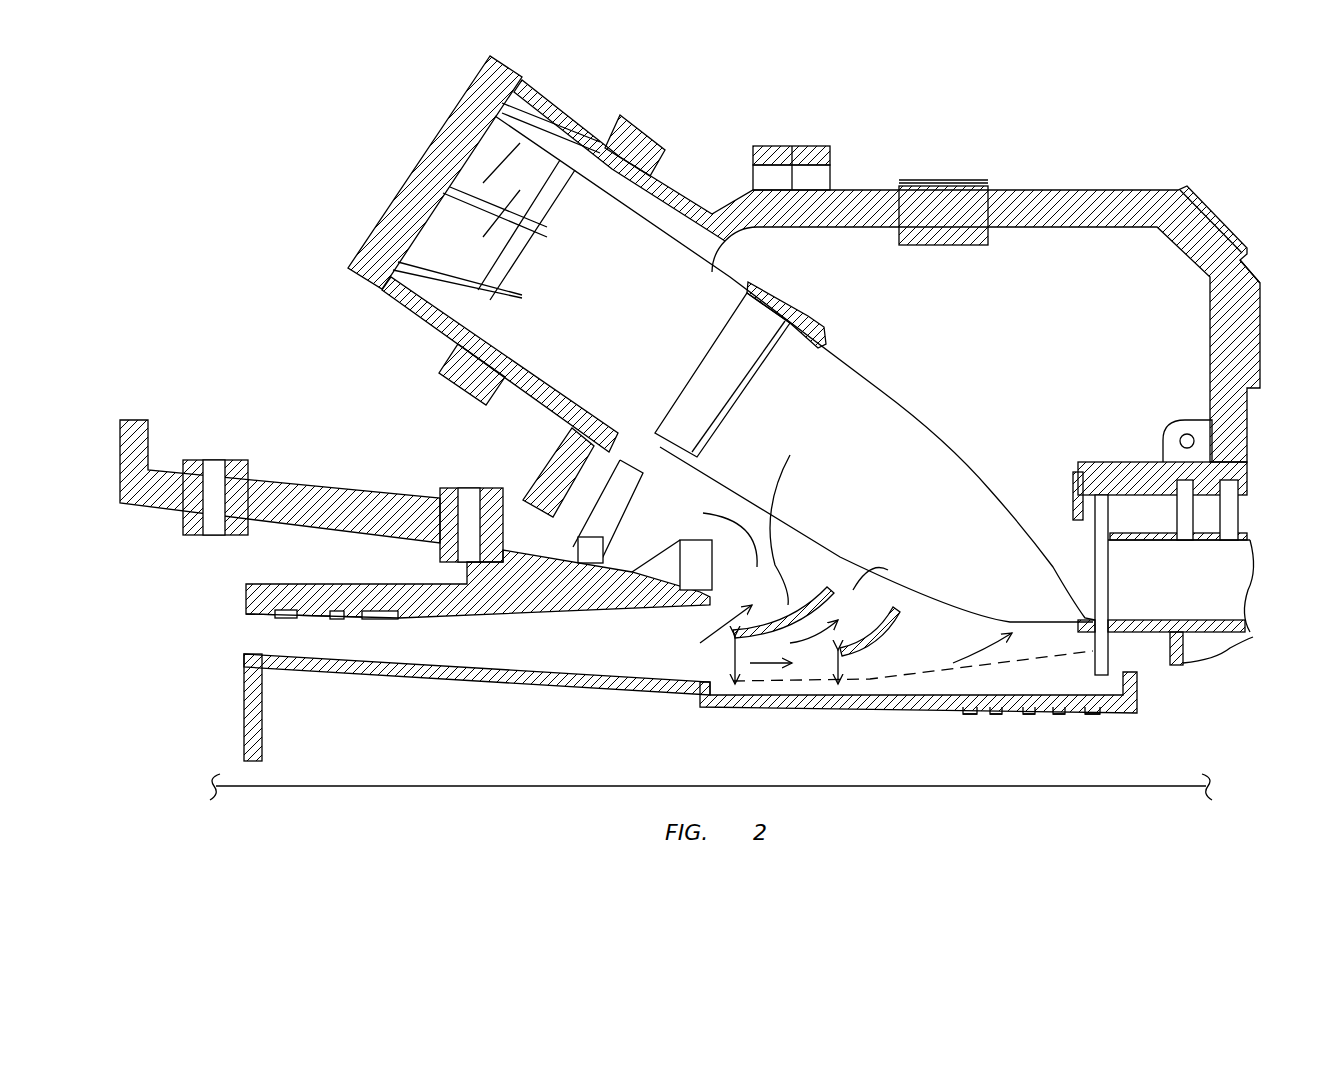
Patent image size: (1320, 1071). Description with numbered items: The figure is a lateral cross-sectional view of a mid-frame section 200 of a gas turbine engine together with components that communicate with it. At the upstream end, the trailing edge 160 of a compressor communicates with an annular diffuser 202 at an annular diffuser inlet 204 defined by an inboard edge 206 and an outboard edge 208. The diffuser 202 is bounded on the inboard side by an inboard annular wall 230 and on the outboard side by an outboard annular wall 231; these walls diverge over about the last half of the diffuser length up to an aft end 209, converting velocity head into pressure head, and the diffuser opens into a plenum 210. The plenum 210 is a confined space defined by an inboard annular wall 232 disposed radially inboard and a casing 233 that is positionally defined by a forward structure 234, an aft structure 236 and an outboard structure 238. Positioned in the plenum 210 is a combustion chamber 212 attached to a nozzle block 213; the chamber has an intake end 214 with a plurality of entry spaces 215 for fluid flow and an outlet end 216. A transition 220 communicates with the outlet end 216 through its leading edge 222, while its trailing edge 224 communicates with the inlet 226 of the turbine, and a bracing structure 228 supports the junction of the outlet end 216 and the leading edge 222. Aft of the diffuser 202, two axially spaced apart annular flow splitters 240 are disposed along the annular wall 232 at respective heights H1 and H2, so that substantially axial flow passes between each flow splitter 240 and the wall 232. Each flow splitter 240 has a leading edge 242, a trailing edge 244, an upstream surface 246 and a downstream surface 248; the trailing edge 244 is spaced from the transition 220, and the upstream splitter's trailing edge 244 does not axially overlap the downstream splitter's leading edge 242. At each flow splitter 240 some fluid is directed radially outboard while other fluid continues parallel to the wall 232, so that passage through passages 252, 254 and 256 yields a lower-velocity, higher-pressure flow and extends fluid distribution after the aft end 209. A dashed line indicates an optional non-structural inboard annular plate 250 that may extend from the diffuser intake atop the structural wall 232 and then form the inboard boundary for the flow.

The trailing edge of compressor 160 is at (199, 663).
The mid-frame section 200 is at (546, 786).
The annular diffuser 202 is at (483, 645).
The annular diffuser inlet 204 is at (244, 634).
The inboard edge 206 is at (244, 657).
The outboard edge 208 is at (244, 612).
The aft end of annular diffuser 209 is at (712, 620).
The plenum 210 is at (1041, 418).
The combustion chamber 212 is at (641, 313).
The nozzle block 213 is at (440, 132).
The intake end 214 is at (440, 190).
The entry spaces 215 is at (532, 162).
The outlet end 216 is at (735, 352).
The transition 220 is at (946, 483).
The leading edge of transition 222 is at (662, 430).
The trailing edge of transition 224 is at (1091, 580).
The turbine inlet 226 is at (1128, 543).
The bracing structure 228 is at (570, 432).
The inboard annular wall of diffuser 230 is at (508, 659).
The outboard annular wall of diffuser 231 is at (421, 621).
The inboard annular wall 232 is at (930, 690).
The casing 233 is at (951, 236).
The forward structure 234 is at (384, 302).
The aft structure 236 is at (1262, 313).
The outboard structure 238 is at (1048, 196).
The annular flow splitters 240 is at (520, 575).
The leading edge of flow splitter 242 is at (722, 665).
The trailing edge of flow splitter 244 is at (832, 580).
The upstream surface 246 is at (790, 520).
The downstream surface 248 is at (848, 600).
The inboard annular plate 250 is at (1030, 682).
The passage 252 is at (708, 535).
The passage 254 is at (857, 603).
The passage 256 is at (945, 647).
The height of first flow splitter H1 is at (733, 692).
The height of second flow splitter H2 is at (847, 670).